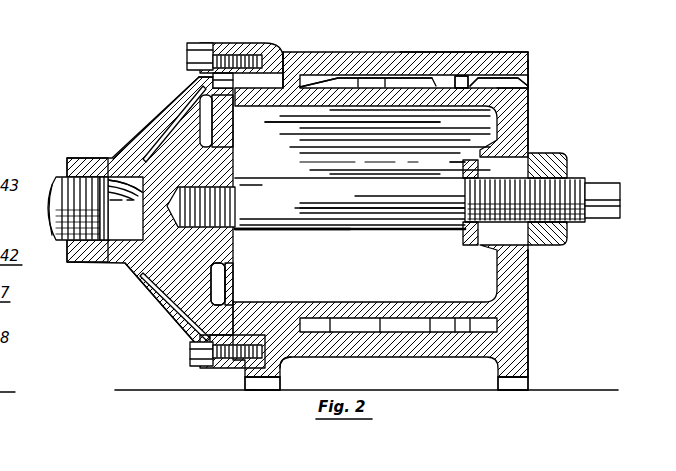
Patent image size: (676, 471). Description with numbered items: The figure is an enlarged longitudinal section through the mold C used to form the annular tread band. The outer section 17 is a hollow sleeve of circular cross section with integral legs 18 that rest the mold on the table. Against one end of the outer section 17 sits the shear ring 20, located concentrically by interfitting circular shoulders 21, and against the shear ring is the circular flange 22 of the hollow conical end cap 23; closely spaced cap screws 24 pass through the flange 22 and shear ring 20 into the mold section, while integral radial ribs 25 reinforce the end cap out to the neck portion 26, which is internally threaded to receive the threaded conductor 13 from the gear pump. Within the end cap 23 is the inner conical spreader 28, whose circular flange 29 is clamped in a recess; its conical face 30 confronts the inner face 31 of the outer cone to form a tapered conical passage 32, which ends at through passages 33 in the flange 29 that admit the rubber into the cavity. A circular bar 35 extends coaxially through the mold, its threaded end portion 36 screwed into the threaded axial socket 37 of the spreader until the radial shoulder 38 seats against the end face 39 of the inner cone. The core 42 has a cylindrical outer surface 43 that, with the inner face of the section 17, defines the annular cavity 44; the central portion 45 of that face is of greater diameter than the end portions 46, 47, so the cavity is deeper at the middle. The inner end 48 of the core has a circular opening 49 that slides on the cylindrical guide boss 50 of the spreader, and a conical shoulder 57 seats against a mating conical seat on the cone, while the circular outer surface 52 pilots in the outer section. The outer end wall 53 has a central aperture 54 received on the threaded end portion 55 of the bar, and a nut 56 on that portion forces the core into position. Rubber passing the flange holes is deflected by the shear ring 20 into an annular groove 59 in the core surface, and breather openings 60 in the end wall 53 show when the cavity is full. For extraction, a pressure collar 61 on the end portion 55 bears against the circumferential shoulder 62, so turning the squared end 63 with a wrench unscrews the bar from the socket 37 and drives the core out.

The threaded conductor 13 is at (50, 166).
The outer section 17 is at (507, 50).
The legs 18 is at (530, 365).
The shear ring 20 is at (230, 44).
The interfitting shoulders 21 is at (283, 52).
The circular flange 22 is at (210, 42).
The end cap 23 is at (104, 90).
The cap screws 24 is at (198, 50).
The radial ribs 25 is at (152, 100).
The neck portion 26 is at (72, 157).
The spreader 28 is at (150, 278).
The circular flange 29 is at (190, 342).
The conical face 30 is at (176, 165).
The inner face 31 is at (130, 155).
The conical passage 32 is at (165, 148).
The through passages 33 is at (205, 88).
The circular bar 35 is at (355, 229).
The threaded end portion 36 is at (245, 213).
The threaded axial socket 37 is at (245, 190).
The radial shoulder 38 is at (250, 238).
The end face 39 is at (240, 163).
The core 42 is at (530, 118).
The cylindrical outer surface 43 is at (353, 80).
The annular cavity 44 is at (390, 76).
The central portion 45 is at (362, 76).
The end portion 46 is at (270, 128).
The end portion 47 is at (377, 142).
The inner end 48 is at (235, 288).
The circular opening 49 is at (240, 260).
The cylindrical guide boss 50 is at (240, 140).
The circular outer surface 52 is at (530, 62).
The outer end wall 53 is at (530, 275).
The central aperture 54 is at (470, 213).
The threaded end portion 55 is at (612, 180).
The nut 56 is at (565, 155).
The conical shoulder 57 is at (240, 113).
The annular groove 59 is at (308, 310).
The breather openings 60 is at (530, 95).
The pressure collar 61 is at (465, 240).
The circumferential shoulder 62 is at (462, 168).
The squared end 63 is at (606, 197).
The mold C is at (452, 52).